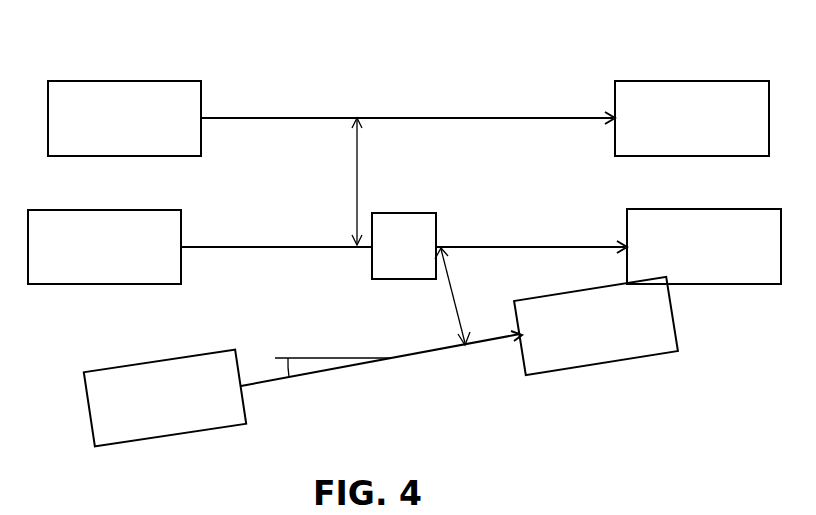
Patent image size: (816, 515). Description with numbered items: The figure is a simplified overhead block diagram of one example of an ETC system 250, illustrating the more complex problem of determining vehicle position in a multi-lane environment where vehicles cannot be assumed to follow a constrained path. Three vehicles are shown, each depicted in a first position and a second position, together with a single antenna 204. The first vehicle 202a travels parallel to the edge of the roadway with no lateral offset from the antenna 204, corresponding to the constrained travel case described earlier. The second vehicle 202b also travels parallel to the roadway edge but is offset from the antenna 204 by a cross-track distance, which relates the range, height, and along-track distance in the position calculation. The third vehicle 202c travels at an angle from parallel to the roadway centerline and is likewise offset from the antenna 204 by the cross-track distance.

The ETC system 250 is at (353, 46).
The antenna 204 is at (404, 213).
The first vehicle 202a is at (404, 246).
The second vehicle 202b is at (408, 118).
The third vehicle 202c is at (381, 361).